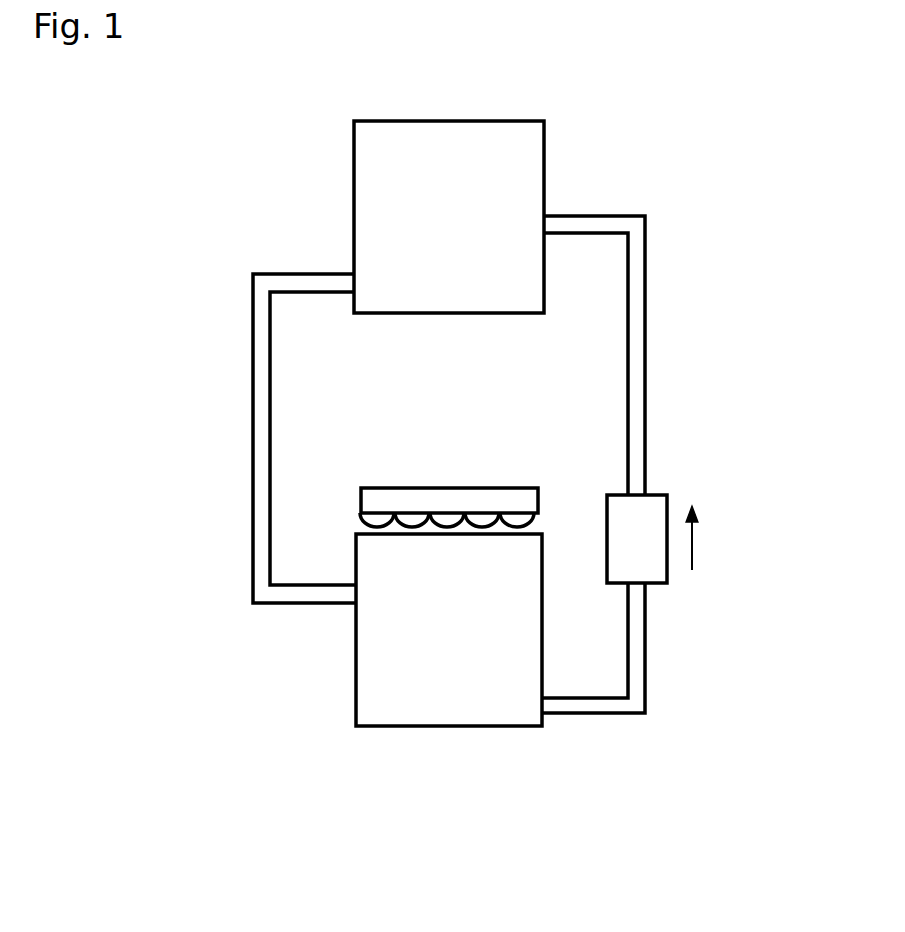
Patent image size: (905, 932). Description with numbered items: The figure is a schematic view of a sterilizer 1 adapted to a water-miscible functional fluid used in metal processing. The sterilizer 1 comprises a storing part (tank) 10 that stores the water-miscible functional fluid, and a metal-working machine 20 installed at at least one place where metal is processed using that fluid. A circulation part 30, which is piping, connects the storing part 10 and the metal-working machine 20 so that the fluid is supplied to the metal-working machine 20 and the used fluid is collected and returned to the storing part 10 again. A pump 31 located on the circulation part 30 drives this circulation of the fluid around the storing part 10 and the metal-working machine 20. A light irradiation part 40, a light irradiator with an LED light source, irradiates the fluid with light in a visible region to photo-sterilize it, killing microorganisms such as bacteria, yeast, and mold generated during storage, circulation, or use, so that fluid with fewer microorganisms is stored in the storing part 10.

The sterilizer 1 is at (690, 92).
The storing part (tank) 10 is at (466, 716).
The metal-working machine 20 is at (538, 158).
The circulation part 30 is at (230, 310).
The pump 31 is at (660, 572).
The light irradiation part 40 is at (530, 472).